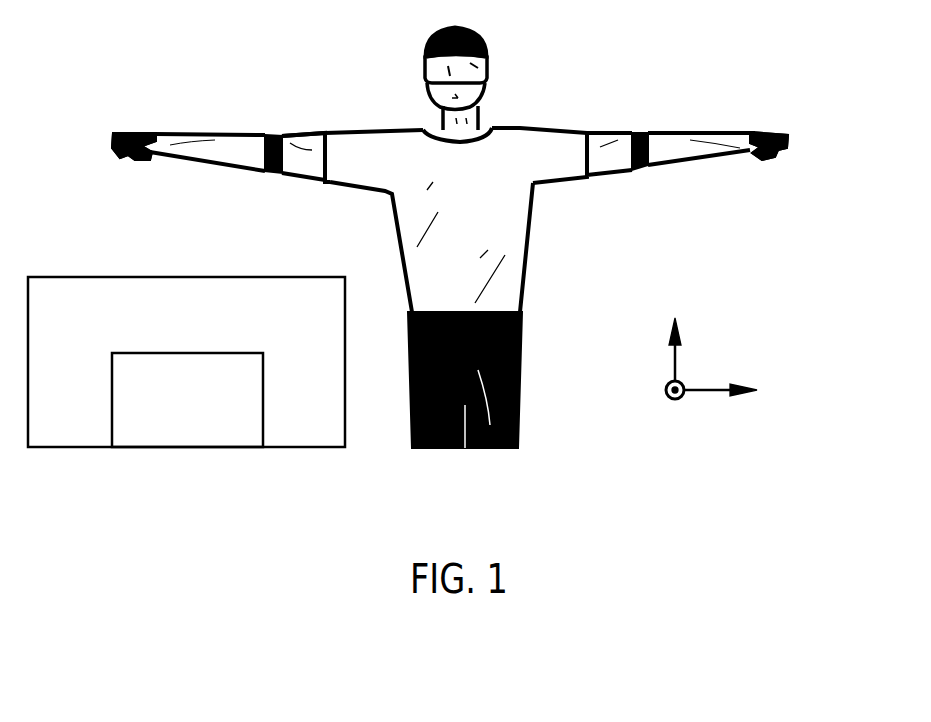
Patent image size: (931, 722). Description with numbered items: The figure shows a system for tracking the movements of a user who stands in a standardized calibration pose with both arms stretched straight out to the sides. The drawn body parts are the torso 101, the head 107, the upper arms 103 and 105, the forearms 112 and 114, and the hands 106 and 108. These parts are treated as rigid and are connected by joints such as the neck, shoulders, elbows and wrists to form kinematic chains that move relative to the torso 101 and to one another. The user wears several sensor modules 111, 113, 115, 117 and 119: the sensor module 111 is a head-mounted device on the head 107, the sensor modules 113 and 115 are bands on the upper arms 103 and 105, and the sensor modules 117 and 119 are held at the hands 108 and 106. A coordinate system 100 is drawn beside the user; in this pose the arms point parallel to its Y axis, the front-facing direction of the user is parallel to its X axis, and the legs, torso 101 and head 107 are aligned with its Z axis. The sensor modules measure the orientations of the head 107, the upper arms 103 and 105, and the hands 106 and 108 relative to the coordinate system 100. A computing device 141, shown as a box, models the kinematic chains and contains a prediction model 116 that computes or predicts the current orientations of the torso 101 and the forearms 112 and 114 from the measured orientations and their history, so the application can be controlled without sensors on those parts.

The coordinate system 100 is at (677, 360).
The torso 101 is at (528, 252).
The upper arm 103 is at (622, 172).
The upper arm 105 is at (290, 178).
The hand 106 is at (137, 132).
The head 107 is at (428, 48).
The hand 108 is at (755, 133).
The sensor module 111 is at (487, 72).
The forearm 112 is at (700, 133).
The sensor module 113 is at (637, 133).
The forearm 114 is at (208, 133).
The sensor module 115 is at (260, 134).
The prediction model 116 is at (187, 400).
The sensor module 117 is at (141, 160).
The sensor module 119 is at (758, 160).
The computing device 141 is at (186, 362).